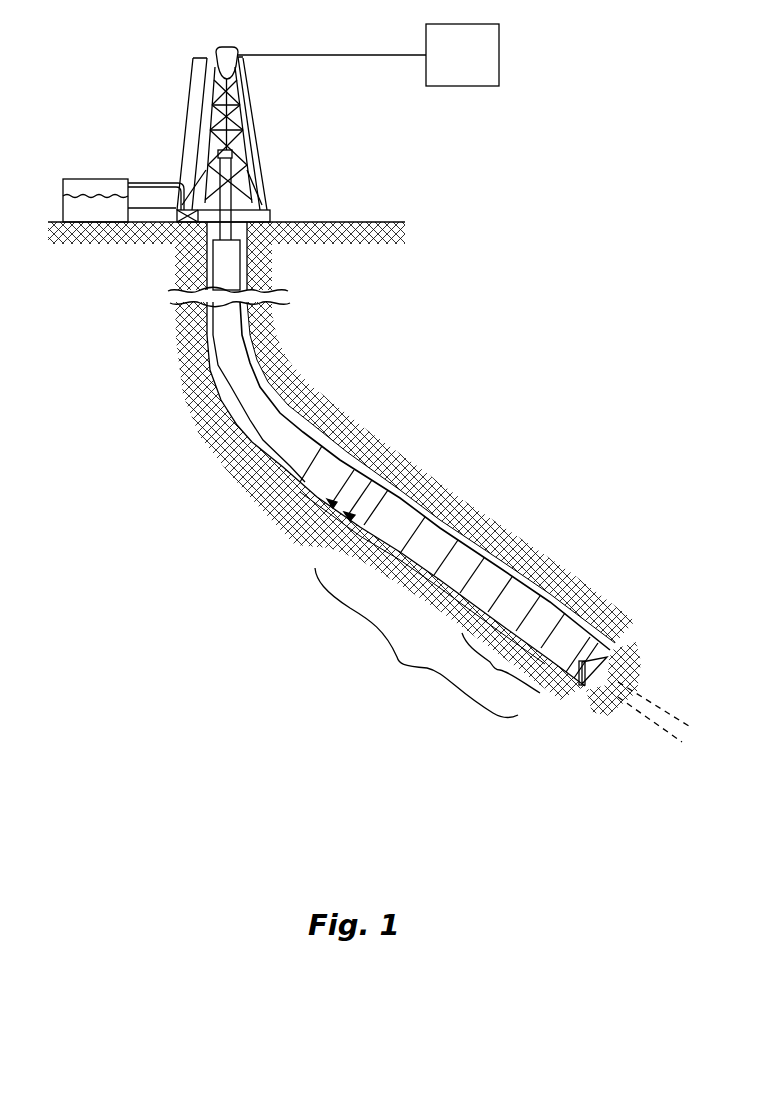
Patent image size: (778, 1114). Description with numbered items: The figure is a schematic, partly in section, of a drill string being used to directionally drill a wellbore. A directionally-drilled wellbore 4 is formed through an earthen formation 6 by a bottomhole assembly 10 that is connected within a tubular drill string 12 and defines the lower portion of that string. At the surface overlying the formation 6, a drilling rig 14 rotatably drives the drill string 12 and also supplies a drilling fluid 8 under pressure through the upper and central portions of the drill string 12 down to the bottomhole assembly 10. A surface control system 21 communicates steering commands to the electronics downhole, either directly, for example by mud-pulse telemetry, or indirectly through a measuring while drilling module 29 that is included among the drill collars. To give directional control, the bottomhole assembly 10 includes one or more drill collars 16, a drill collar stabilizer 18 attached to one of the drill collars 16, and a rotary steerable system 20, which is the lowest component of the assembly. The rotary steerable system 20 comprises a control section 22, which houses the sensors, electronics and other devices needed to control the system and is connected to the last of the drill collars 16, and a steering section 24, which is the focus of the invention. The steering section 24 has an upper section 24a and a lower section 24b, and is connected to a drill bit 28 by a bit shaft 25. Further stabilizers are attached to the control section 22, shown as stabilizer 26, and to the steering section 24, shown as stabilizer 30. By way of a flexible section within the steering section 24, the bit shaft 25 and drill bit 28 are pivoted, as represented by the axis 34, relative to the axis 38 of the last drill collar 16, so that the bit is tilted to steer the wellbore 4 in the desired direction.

The wellbore 4 is at (207, 363).
The earthen formation 6 is at (267, 321).
The drilling fluid 8 is at (63, 204).
The bottomhole assembly 10 is at (553, 420).
The tubular drill string 12 is at (343, 455).
The drilling rig 14 is at (297, 138).
The drill collar 16 is at (340, 527).
The drill collar stabilizer 18 is at (403, 486).
The rotary steerable system 20 is at (416, 642).
The surface control system 21 is at (475, 66).
The control section 22 is at (480, 565).
The steering section 24 is at (500, 663).
The upper section 24a is at (512, 585).
The lower section 24b is at (537, 608).
The bit shaft 25 is at (583, 632).
The stabilizer 26 is at (462, 545).
The drill bit 28 is at (600, 655).
The measuring while drilling module 29 is at (370, 490).
The stabilizer 30 is at (560, 622).
The axis 34 is at (657, 703).
The axis 38 is at (650, 725).